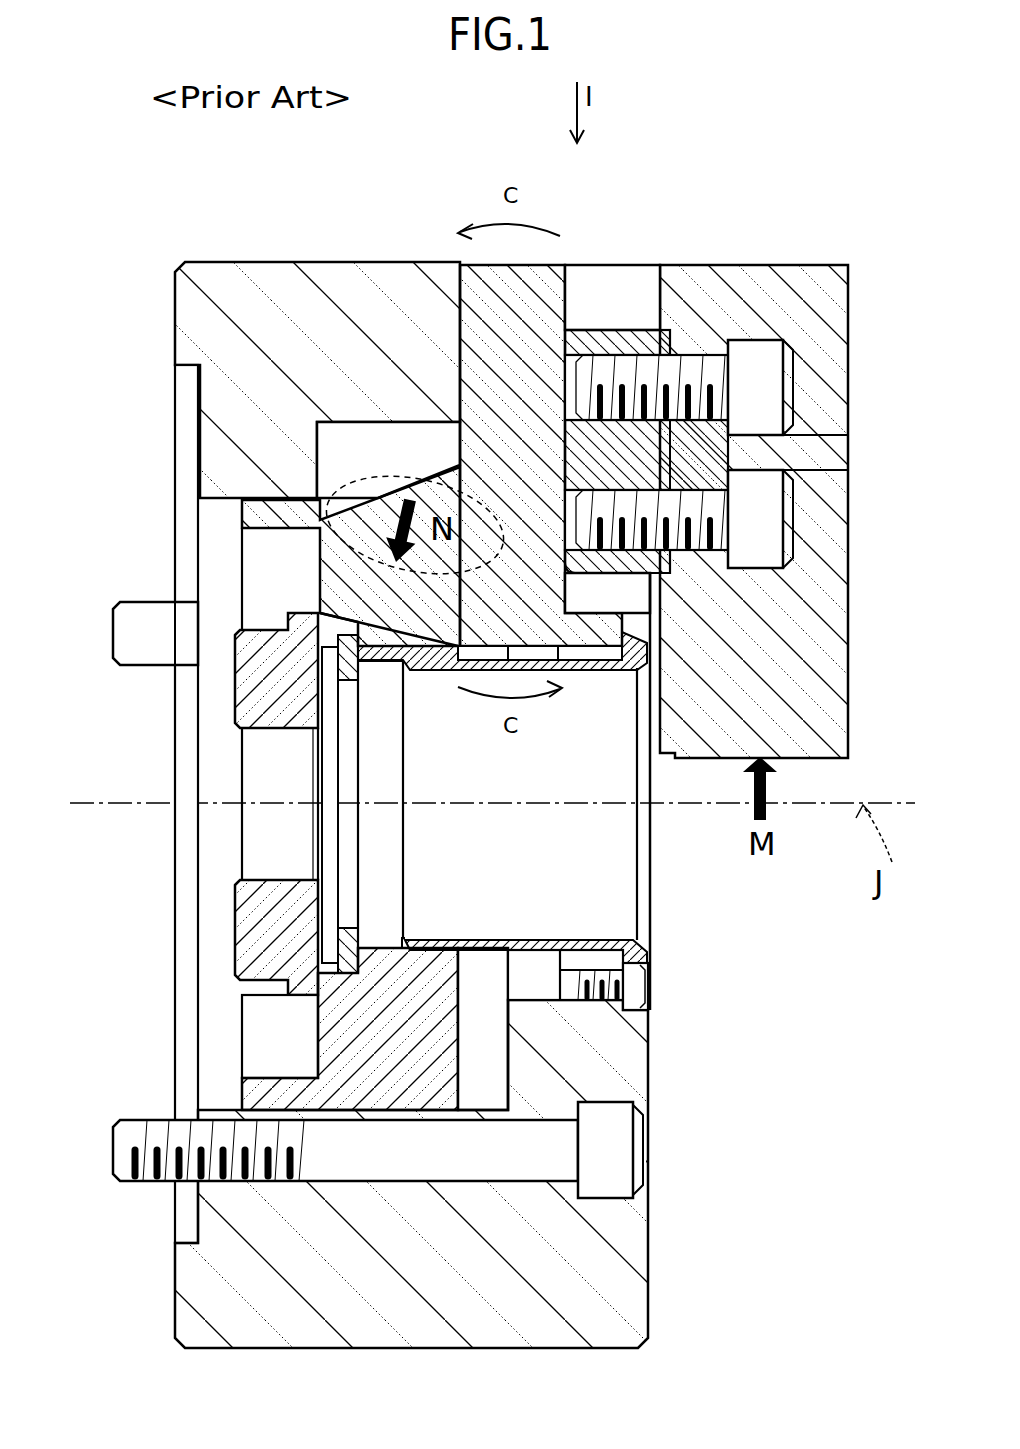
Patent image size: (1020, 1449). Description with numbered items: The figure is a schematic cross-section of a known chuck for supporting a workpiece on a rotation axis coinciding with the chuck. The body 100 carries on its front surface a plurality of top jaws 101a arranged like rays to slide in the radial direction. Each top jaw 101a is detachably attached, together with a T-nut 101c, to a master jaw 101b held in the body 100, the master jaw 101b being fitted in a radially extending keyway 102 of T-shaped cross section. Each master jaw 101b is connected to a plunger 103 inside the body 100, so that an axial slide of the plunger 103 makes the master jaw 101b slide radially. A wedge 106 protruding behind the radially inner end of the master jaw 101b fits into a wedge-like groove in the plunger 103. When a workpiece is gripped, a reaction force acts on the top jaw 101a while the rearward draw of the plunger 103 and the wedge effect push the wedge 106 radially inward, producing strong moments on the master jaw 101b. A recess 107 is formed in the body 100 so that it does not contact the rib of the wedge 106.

The body 100 is at (633, 1073).
The top jaws 101a is at (776, 272).
The master jaws 101b is at (548, 283).
The T-nuts 101c is at (637, 337).
The keyway 102 is at (462, 338).
The plunger 103 is at (348, 1029).
The wedge 106 is at (352, 583).
The recess 107 is at (376, 432).